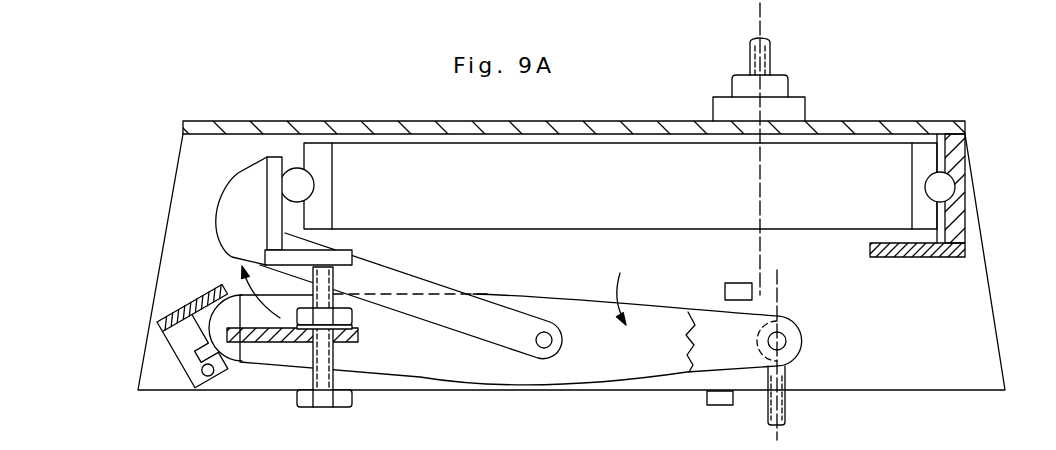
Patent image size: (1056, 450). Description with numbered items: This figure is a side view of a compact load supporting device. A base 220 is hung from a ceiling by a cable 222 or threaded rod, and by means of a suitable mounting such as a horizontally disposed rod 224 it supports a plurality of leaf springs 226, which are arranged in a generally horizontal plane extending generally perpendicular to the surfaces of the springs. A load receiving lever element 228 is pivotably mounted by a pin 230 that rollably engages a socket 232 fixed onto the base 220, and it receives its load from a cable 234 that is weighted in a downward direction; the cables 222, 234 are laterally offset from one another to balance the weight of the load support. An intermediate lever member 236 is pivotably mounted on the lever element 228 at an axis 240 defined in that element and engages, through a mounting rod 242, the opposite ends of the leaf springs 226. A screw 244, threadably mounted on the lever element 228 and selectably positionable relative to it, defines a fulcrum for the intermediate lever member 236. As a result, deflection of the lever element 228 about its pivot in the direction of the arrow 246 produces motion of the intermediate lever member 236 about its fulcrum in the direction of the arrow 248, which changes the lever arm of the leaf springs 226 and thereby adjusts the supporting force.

The base 220 is at (453, 122).
The cable 222 is at (772, 44).
The horizontally disposed rod 224 is at (945, 188).
The leaf springs 226 is at (614, 196).
The load receiving lever element 228 is at (640, 366).
The pin 230 is at (224, 348).
The socket 232 is at (182, 347).
The cable 234 is at (787, 410).
The intermediate lever member 236 is at (410, 283).
The axis 240 is at (549, 338).
The mounting rod 242 is at (296, 180).
The screw 244 is at (331, 367).
The arrow 246 is at (630, 296).
The arrow 248 is at (231, 290).